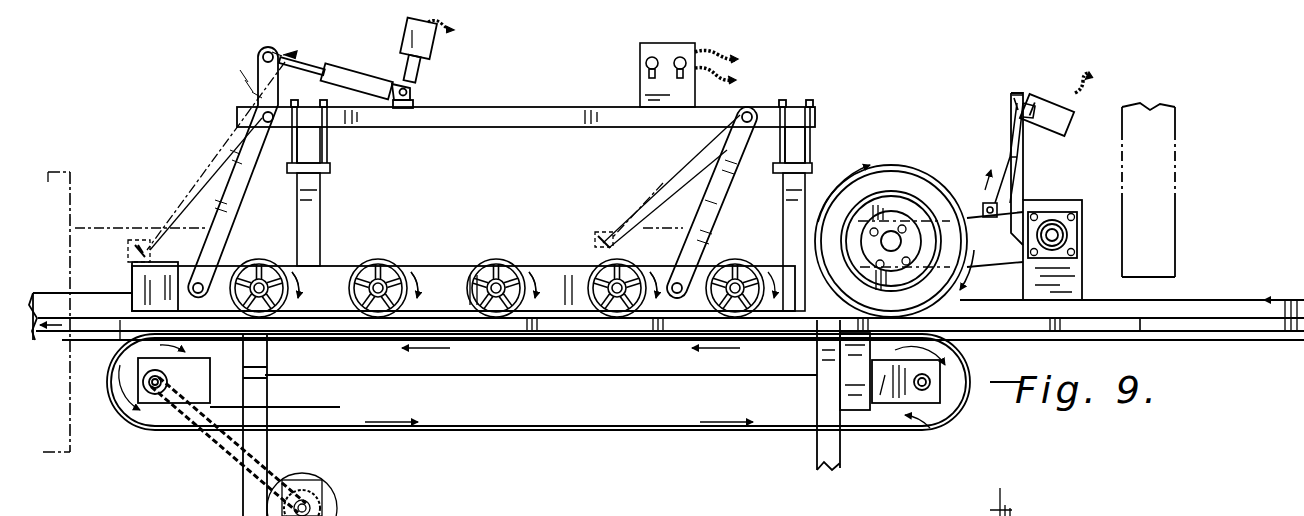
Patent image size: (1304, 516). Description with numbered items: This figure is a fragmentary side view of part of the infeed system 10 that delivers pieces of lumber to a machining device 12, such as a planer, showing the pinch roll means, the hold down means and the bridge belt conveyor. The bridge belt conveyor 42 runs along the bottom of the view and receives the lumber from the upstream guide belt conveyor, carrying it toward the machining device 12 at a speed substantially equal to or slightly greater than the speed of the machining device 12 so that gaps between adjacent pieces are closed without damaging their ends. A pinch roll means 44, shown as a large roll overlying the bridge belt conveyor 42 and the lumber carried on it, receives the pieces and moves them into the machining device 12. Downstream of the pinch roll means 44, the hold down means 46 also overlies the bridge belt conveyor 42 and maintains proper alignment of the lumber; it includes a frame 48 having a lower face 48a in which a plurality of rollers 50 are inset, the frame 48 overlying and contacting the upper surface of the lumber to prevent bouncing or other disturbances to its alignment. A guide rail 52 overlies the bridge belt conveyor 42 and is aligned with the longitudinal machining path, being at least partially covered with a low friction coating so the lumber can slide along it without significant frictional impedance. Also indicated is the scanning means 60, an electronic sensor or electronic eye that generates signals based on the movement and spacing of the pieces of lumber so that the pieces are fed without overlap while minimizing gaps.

The infeed system 10 is at (638, 352).
The machining device 12 is at (70, 204).
The bridge belt conveyor 42 is at (793, 335).
The pinch roll means 44 is at (936, 188).
The hold down means 46 is at (752, 98).
The frame 48 is at (578, 264).
The lower face 48a is at (450, 315).
The rollers 50 is at (384, 259).
The guide rail 52 is at (81, 342).
The scanning means 60 is at (1175, 212).